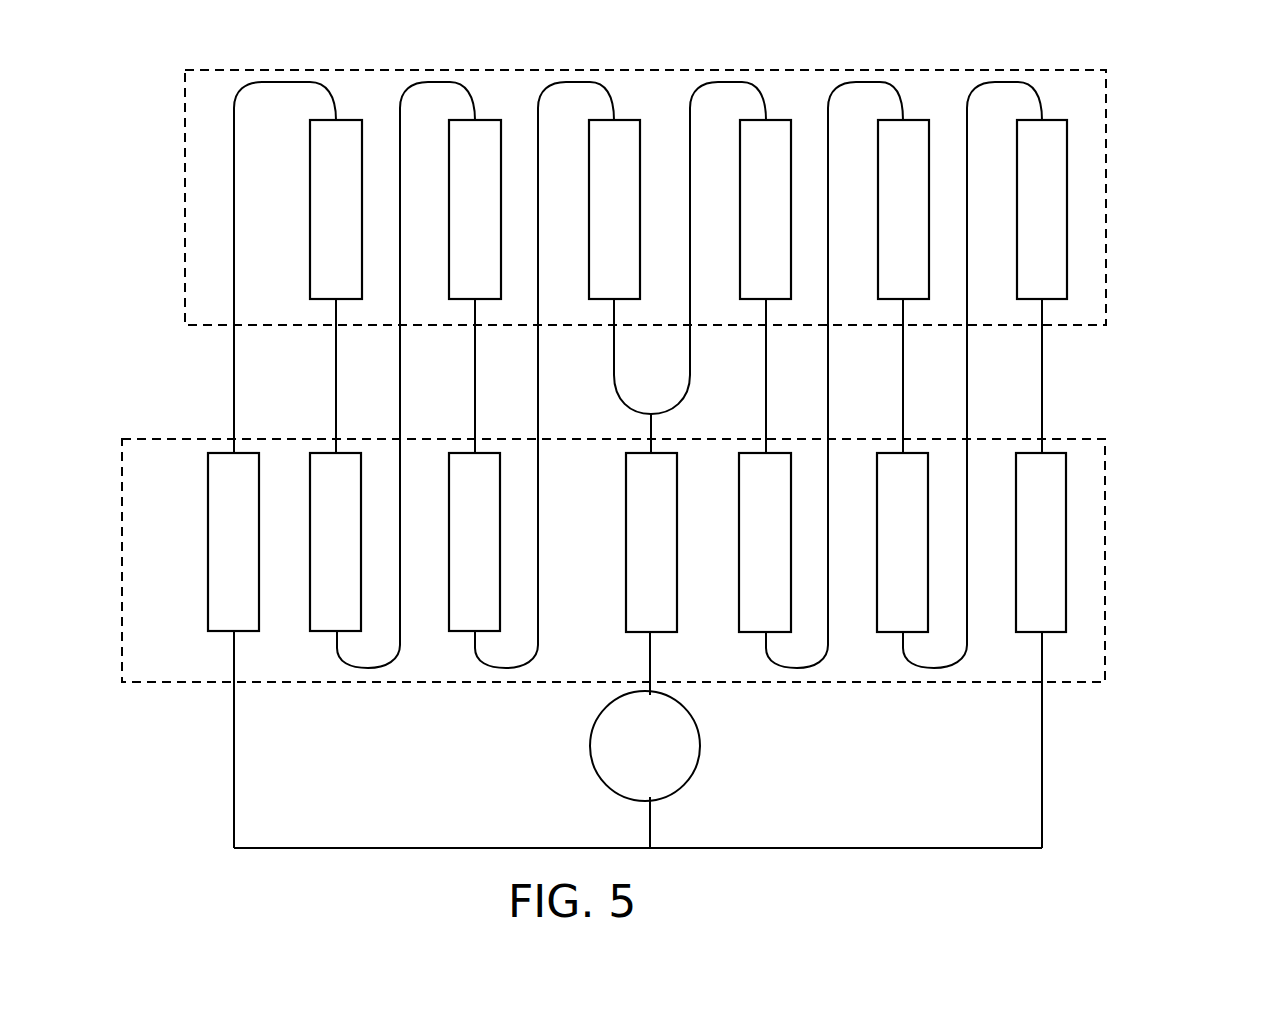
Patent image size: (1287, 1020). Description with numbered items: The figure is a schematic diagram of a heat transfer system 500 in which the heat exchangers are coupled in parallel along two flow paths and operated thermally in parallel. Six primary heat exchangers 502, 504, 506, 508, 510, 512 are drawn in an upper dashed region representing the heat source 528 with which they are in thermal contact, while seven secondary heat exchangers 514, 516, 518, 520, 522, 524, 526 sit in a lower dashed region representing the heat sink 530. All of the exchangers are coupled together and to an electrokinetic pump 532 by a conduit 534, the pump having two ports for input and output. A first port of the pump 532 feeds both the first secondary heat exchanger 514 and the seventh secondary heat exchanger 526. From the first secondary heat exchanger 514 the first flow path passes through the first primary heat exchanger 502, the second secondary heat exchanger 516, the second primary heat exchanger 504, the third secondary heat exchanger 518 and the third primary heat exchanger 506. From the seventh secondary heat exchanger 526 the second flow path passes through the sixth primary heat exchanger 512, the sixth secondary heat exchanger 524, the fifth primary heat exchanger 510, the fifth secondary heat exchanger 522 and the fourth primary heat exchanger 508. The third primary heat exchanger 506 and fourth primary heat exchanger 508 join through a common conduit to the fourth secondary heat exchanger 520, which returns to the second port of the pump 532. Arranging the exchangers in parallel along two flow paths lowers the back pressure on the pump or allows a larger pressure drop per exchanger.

The heat transfer system 500 is at (1093, 415).
The first primary heat exchanger 502 is at (350, 132).
The second primary heat exchanger 504 is at (489, 132).
The third primary heat exchanger 506 is at (628, 132).
The fourth primary heat exchanger 508 is at (779, 132).
The fifth primary heat exchanger 510 is at (917, 132).
The sixth primary heat exchanger 512 is at (1056, 132).
The first secondary heat exchanger 514 is at (247, 465).
The second secondary heat exchanger 516 is at (349, 465).
The third secondary heat exchanger 518 is at (487, 465).
The fourth secondary heat exchanger 520 is at (663, 515).
The fifth secondary heat exchanger 522 is at (776, 465).
The sixth secondary heat exchanger 524 is at (915, 465).
The seventh secondary heat exchanger 526 is at (1054, 465).
The heat source 528 is at (1080, 160).
The heat sink 530 is at (1105, 542).
The electrokinetic pump 532 is at (688, 772).
The conduit 534 is at (1042, 797).